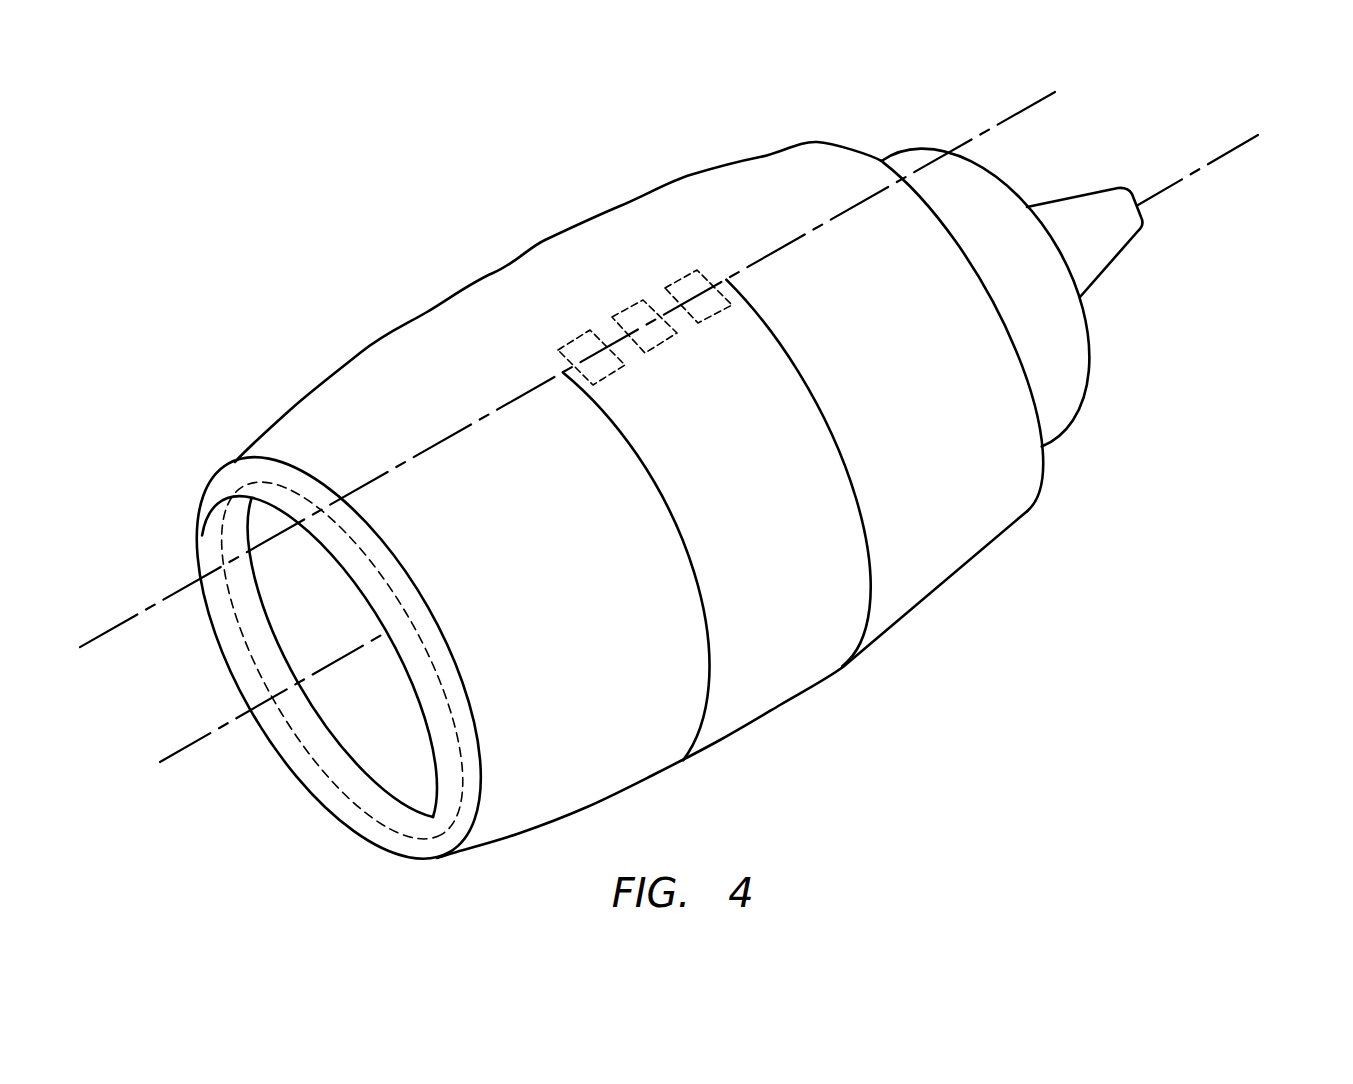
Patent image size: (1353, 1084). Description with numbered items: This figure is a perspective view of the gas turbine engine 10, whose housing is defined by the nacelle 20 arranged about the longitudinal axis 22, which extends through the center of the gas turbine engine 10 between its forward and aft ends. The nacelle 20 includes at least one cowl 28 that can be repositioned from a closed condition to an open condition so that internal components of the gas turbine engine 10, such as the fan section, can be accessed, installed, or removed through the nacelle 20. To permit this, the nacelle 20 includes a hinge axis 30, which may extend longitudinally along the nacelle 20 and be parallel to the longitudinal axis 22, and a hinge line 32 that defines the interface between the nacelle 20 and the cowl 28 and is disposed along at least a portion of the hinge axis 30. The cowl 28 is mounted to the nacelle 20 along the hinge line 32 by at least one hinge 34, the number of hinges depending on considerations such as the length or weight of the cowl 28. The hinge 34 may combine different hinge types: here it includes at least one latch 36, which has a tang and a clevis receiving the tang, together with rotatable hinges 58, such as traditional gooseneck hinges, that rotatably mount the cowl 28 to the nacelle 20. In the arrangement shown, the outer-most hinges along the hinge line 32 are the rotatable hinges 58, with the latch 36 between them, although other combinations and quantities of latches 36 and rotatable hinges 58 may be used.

The gas turbine engine 10 is at (931, 709).
The nacelle 20 is at (963, 540).
The longitudinal axis 22 is at (162, 764).
The cowl 28 is at (813, 667).
The hinge axis 30 is at (795, 238).
The hinge line 32 is at (631, 280).
The hinge 34 is at (610, 279).
The latch 36 is at (625, 310).
The rotatable hinge 58 is at (572, 340).